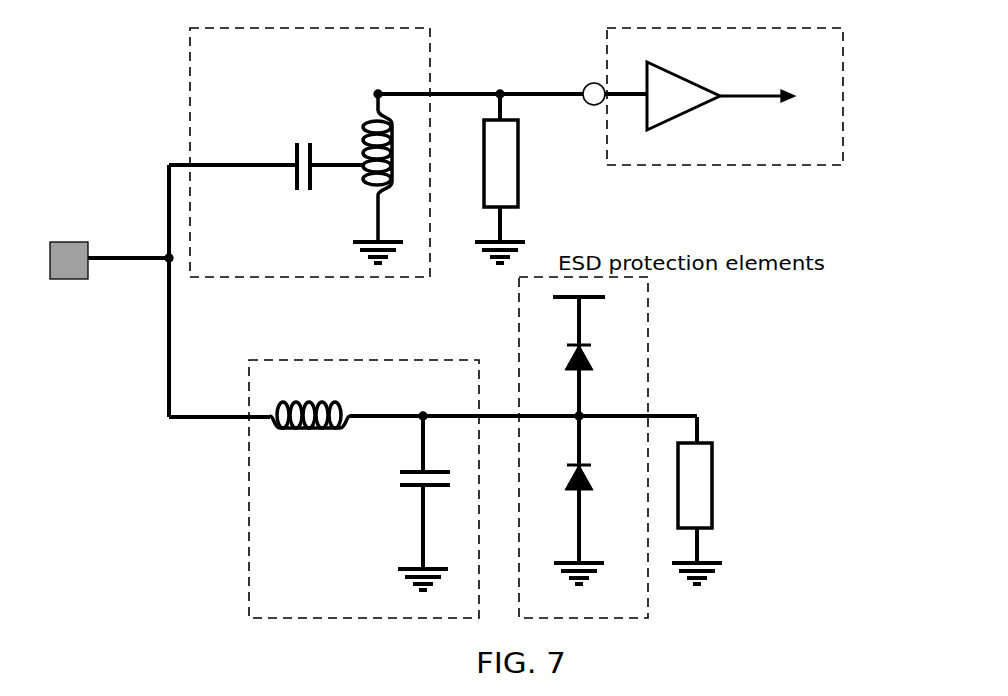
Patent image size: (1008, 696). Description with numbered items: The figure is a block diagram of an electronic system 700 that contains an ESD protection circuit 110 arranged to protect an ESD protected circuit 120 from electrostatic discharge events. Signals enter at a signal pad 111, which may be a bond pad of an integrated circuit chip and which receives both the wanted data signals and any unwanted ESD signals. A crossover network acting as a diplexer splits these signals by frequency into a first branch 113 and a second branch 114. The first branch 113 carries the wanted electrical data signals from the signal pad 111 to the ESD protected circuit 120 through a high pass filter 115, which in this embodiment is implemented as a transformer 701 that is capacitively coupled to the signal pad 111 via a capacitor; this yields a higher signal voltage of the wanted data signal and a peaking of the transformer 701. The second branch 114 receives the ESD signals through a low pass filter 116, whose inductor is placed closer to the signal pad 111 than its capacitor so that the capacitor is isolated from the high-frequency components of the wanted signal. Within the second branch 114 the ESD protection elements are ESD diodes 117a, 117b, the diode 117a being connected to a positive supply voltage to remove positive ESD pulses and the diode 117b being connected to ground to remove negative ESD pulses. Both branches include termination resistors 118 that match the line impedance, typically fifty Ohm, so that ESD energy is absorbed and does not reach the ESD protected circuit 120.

The ESD protection circuit 110 is at (117, 105).
The signal pad 111 is at (65, 268).
The first branch 113 is at (128, 167).
The second branch 114 is at (140, 418).
The high pass filter 115 is at (432, 58).
The low pass filter 116 is at (400, 361).
The ESD diode 117a is at (596, 360).
The ESD diode 117b is at (601, 500).
The termination resistor 118 is at (508, 157).
The ESD protected circuit 120 is at (843, 148).
The electronic system 700 is at (915, 670).
The transformer 701 is at (357, 107).